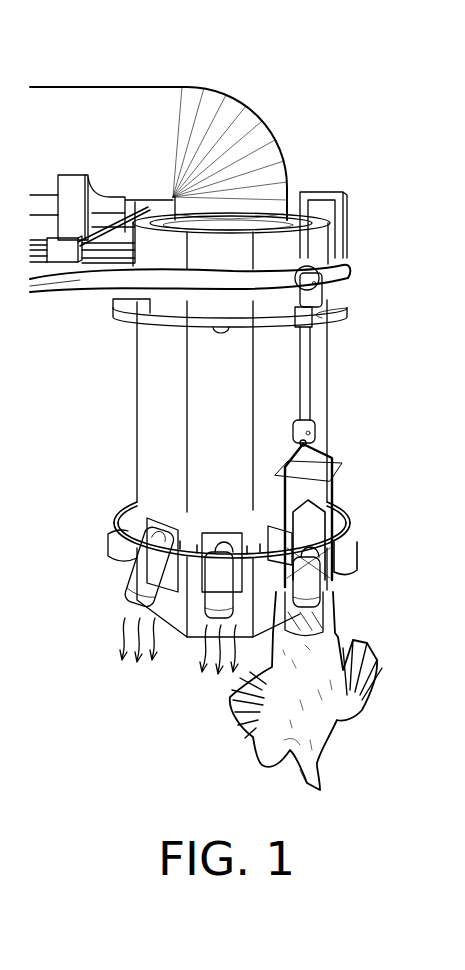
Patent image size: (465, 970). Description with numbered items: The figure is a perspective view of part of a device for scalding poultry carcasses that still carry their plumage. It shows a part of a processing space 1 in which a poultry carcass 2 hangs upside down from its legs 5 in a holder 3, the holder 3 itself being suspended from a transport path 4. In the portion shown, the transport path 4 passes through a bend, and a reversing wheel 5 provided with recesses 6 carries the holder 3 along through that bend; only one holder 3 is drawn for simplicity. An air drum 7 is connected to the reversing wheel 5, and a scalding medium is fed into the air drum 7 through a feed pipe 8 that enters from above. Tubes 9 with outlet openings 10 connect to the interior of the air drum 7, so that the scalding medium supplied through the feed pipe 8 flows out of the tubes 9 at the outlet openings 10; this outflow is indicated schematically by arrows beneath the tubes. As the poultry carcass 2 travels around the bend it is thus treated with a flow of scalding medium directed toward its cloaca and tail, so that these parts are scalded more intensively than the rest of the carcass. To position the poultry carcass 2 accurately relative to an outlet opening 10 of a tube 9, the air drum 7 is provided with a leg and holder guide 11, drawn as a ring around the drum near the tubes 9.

The processing space 1 is at (80, 479).
The poultry carcass 2 is at (330, 772).
The holder 3 is at (335, 463).
The transport path 4 is at (347, 257).
The reversing wheel 5 is at (343, 295).
The recesses 6 is at (140, 313).
The air drum 7 is at (157, 415).
The feed pipe 8 is at (138, 97).
The tubes 9 is at (140, 578).
The outlet openings 10 is at (130, 613).
The leg and holder guide 11 is at (350, 520).